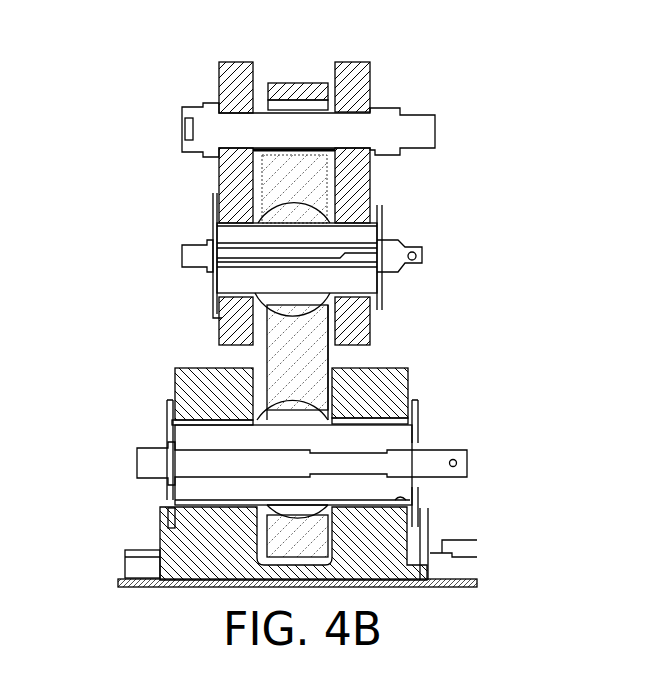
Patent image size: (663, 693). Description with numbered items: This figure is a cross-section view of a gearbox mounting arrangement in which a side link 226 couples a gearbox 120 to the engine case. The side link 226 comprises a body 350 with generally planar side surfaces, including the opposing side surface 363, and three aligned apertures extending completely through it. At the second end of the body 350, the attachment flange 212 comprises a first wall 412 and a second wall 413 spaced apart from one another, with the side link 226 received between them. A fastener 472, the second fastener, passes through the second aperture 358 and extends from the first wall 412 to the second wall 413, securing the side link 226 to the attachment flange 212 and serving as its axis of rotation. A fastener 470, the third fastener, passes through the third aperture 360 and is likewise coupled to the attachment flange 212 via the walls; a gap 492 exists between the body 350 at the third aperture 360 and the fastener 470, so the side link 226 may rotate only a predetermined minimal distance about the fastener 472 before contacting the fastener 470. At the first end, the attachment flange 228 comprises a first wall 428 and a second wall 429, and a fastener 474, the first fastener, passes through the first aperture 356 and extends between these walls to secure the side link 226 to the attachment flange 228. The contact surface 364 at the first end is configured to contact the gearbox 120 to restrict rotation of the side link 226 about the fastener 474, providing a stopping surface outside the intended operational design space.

The gearbox 120 is at (258, 566).
The attachment flange 212 is at (368, 177).
The side link 226 is at (328, 352).
The attachment flange 228 is at (412, 393).
The body 350 is at (316, 351).
The first aperture 356 is at (289, 405).
The second aperture 358 is at (290, 206).
The third aperture 360 is at (289, 98).
The opposing side surface 363 is at (327, 390).
The contact surface 364 is at (318, 558).
The first wall 412 is at (219, 338).
The second wall 413 is at (372, 333).
The first wall 428 is at (175, 380).
The second wall 429 is at (408, 378).
The fastener 470 is at (185, 130).
The fastener 472 is at (185, 256).
The fastener 474 is at (138, 462).
The gap 492 is at (325, 103).